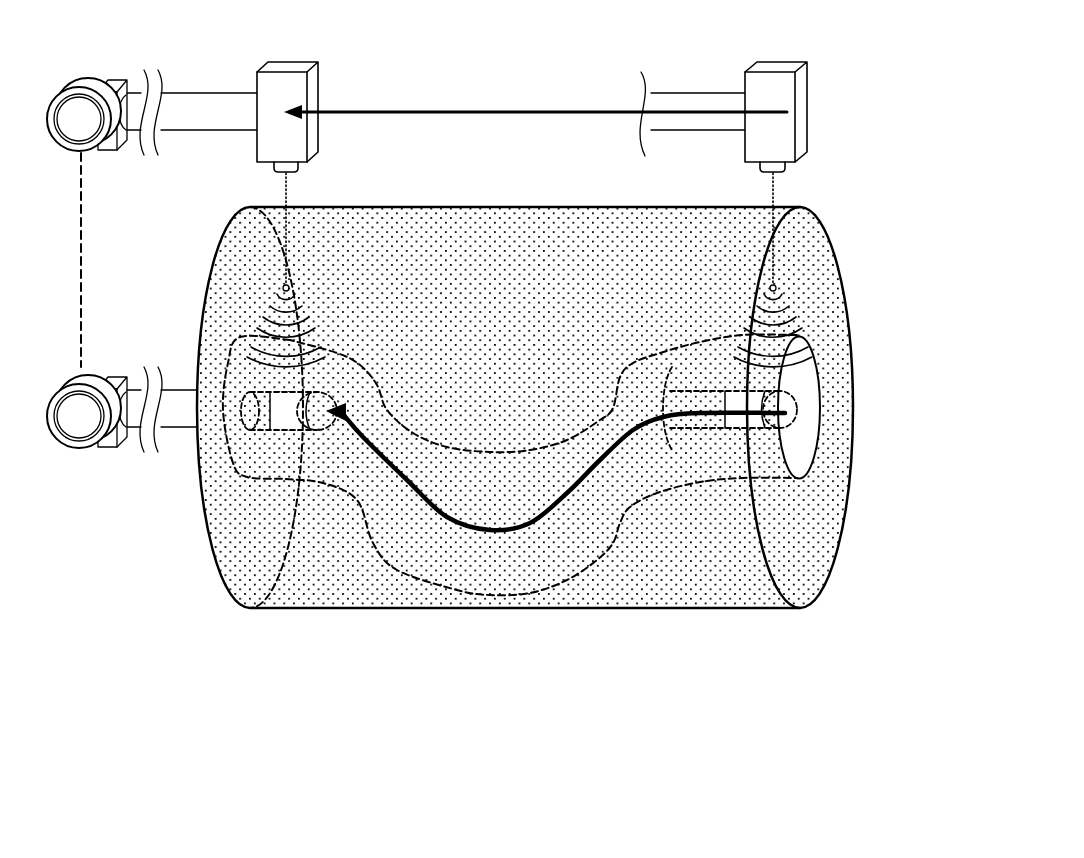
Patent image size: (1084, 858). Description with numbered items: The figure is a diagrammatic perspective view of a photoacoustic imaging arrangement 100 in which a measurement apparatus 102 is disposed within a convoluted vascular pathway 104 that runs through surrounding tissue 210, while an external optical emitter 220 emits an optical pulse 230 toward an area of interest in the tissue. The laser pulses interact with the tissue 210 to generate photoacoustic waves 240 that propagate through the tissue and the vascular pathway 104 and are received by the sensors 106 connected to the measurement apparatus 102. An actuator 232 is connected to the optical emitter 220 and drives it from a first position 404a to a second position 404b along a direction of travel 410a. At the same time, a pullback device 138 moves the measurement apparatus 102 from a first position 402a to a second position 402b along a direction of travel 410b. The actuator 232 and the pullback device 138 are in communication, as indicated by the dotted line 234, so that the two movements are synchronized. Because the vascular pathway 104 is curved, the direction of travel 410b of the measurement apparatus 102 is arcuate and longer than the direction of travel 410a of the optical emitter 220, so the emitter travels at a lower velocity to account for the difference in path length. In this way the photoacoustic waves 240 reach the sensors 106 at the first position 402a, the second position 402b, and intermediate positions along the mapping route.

The inspection system 100 is at (853, 183).
The measurement apparatus 102 is at (237, 448).
The vascular pathway 104 is at (821, 385).
The sensors 106 is at (322, 432).
The pullback device 138 is at (100, 371).
The tissue 210 is at (852, 289).
The optical emitter 220 is at (257, 88).
The optical pulse 230 is at (285, 198).
The actuator 232 is at (95, 77).
The dotted line 234 is at (83, 261).
The photoacoustic waves 240 is at (272, 305).
The first position 402a is at (797, 420).
The second position 402b is at (338, 395).
The first position 404a is at (803, 105).
The second position 404b is at (318, 98).
The direction of travel 410a is at (412, 108).
The direction of travel 410b is at (445, 516).